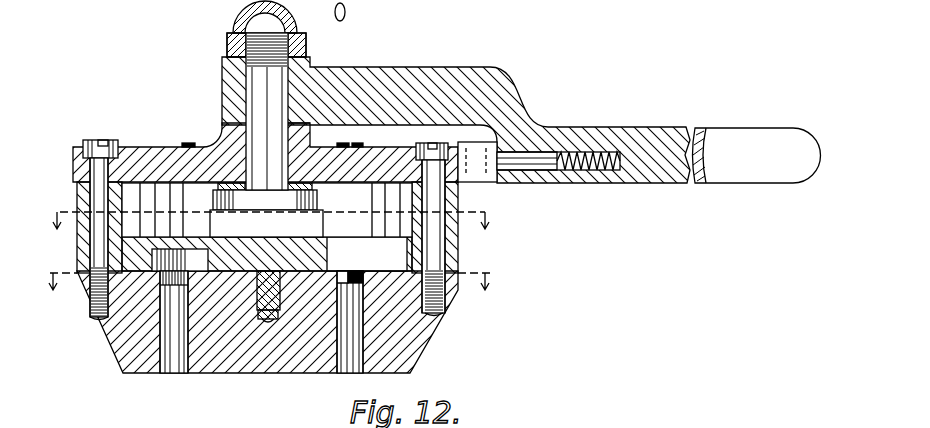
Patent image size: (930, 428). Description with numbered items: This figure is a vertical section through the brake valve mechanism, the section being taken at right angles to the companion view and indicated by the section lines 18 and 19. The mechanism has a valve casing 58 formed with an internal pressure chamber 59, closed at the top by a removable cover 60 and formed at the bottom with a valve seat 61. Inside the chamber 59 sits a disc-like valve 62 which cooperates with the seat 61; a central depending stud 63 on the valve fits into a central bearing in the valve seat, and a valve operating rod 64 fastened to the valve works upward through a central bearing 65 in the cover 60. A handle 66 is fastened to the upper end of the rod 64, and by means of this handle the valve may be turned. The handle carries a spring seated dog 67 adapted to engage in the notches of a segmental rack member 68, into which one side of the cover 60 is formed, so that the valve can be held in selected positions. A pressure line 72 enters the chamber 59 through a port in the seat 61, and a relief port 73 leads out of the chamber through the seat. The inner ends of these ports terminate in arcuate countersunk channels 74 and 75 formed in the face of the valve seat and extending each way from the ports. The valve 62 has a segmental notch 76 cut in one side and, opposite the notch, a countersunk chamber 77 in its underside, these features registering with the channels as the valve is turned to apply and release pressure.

The section line 18- 18 is at (277, 234).
The section line 19- 19 is at (272, 299).
The valve casing 58 is at (458, 262).
The internal pressure chamber 59 is at (196, 183).
The cover 60 is at (135, 136).
The valve seat 61 is at (418, 371).
The disc-like valve 62 is at (112, 325).
The central depending stud 63 is at (290, 272).
The valve operating rod 64 is at (272, 86).
The central bearing 65 is at (315, 141).
The handle 66 is at (665, 128).
The spring seated dog 67 is at (476, 176).
The segmental rack member 68 is at (480, 140).
The pressure line 72 is at (345, 367).
The relief port 73 is at (168, 372).
The arcuate countersunk channel 74 is at (348, 275).
The arcuate countersunk channel 75 is at (204, 278).
The segmental notch 76 is at (357, 242).
The countersunk chamber 77 is at (197, 255).